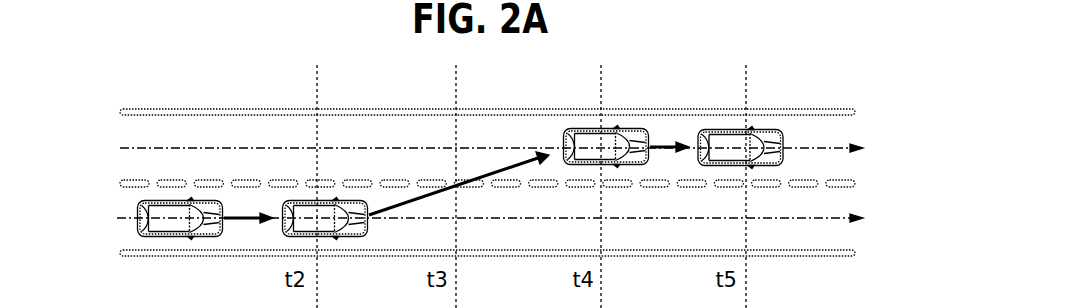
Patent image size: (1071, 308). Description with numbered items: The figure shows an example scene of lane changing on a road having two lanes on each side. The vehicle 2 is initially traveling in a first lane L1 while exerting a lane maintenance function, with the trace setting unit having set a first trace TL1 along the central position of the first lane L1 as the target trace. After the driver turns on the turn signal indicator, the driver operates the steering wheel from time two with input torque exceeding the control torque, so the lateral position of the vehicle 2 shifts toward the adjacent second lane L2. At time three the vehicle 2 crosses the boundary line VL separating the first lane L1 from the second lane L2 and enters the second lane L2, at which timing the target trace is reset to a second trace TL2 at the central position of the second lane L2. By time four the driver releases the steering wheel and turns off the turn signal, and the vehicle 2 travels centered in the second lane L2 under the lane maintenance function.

The vehicle 2 is at (190, 234).
The first lane L1 is at (131, 238).
The second lane L2 is at (188, 127).
The boundary line VL is at (137, 190).
The first trace TL1 is at (513, 219).
The second trace TL2 is at (515, 149).